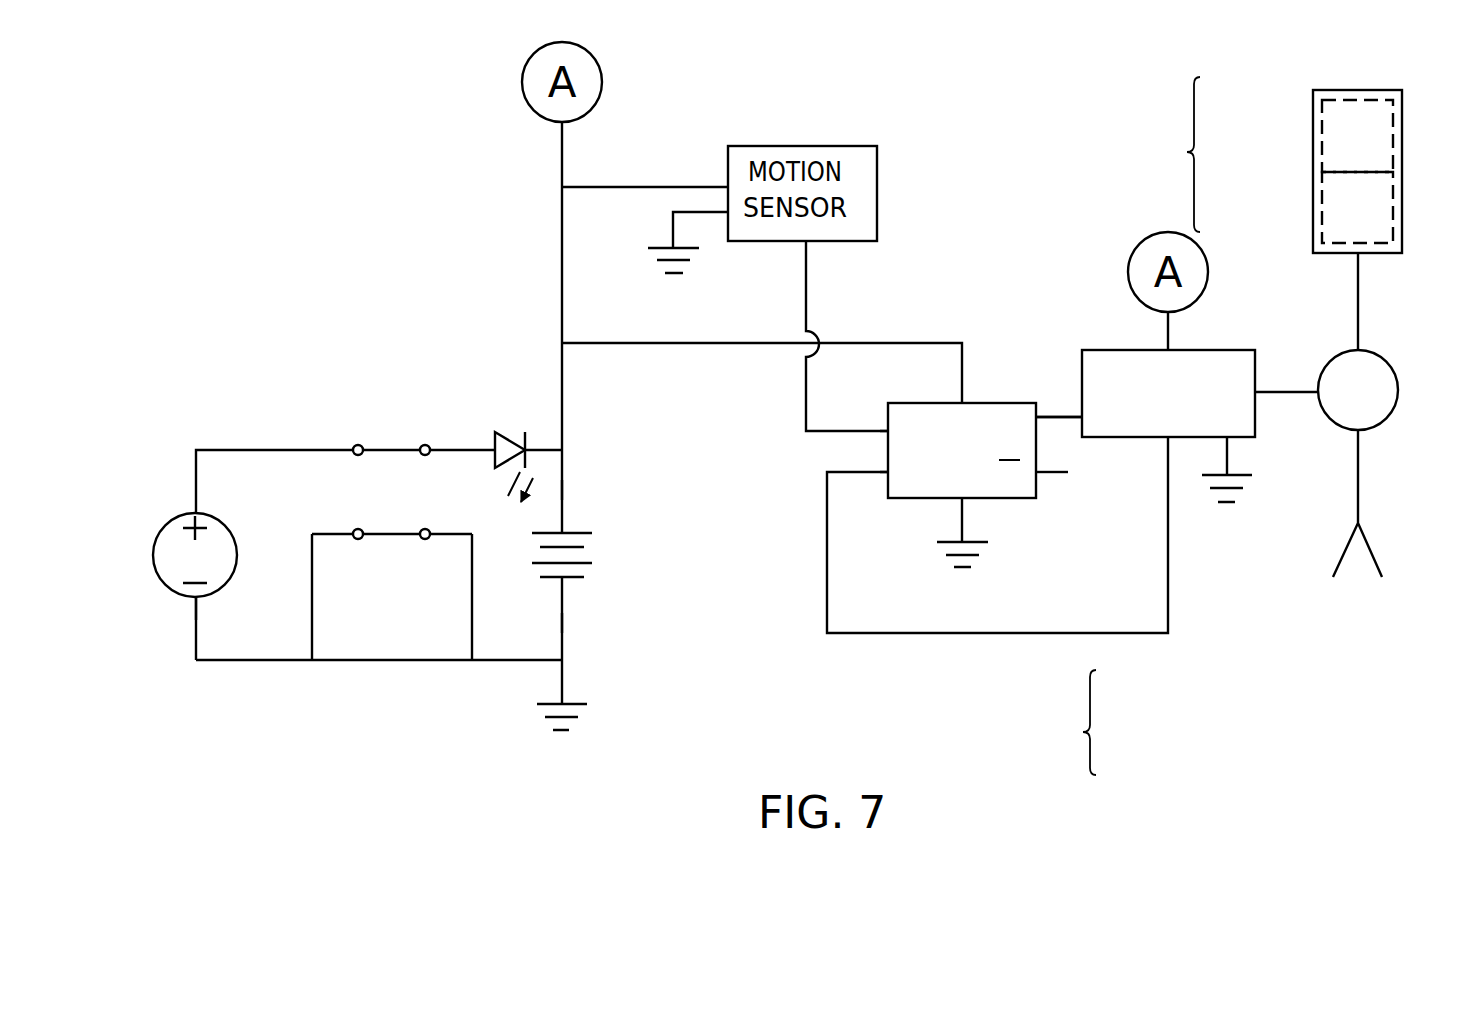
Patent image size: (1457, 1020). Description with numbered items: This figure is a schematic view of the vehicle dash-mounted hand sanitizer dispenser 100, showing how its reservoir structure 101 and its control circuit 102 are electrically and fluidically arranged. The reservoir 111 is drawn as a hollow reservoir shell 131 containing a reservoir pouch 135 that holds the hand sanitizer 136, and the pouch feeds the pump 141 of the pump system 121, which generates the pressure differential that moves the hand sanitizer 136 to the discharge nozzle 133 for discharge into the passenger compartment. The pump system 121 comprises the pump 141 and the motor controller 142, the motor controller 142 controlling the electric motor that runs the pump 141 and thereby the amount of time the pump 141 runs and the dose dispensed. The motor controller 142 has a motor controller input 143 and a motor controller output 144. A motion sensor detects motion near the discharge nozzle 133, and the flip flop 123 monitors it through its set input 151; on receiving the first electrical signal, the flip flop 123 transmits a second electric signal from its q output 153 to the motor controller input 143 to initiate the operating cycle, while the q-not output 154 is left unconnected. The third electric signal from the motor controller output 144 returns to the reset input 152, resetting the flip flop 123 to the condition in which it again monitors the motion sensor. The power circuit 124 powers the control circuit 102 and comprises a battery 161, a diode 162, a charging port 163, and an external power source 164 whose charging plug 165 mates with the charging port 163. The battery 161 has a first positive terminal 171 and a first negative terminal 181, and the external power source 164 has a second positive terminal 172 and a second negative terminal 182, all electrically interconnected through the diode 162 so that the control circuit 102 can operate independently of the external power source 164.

The vehicle dash-mounted hand sanitizer dispenser 100 is at (346, 722).
The reservoir structure 101 is at (1352, 590).
The control circuit 102 is at (338, 199).
The reservoir 111 is at (1162, 154).
The pump system 121 is at (1090, 722).
The flip flop 123 is at (891, 514).
The power circuit 124 is at (258, 449).
The reservoir shell 131 is at (1313, 93).
The discharge nozzle 133 is at (1408, 525).
The reservoir pouch 135 is at (1350, 128).
The hand sanitizer 136 is at (1345, 195).
The pump 141 is at (1325, 416).
The motor controller 142 is at (1238, 360).
The motor controller input 143 is at (1060, 416).
The motor controller output 144 is at (1055, 633).
The set input 151 is at (888, 403).
The reset input 152 is at (887, 450).
The q output 153 is at (1003, 402).
The q-not output 154 is at (1021, 481).
The battery 161 is at (590, 555).
The diode 162 is at (512, 430).
The charging port 163 is at (425, 443).
The external power source 164 is at (153, 545).
The charging plug 165 is at (358, 443).
The first positive terminal 171 is at (562, 490).
The second positive terminal 172 is at (194, 473).
The first negative terminal 181 is at (562, 623).
The second negative terminal 182 is at (196, 608).